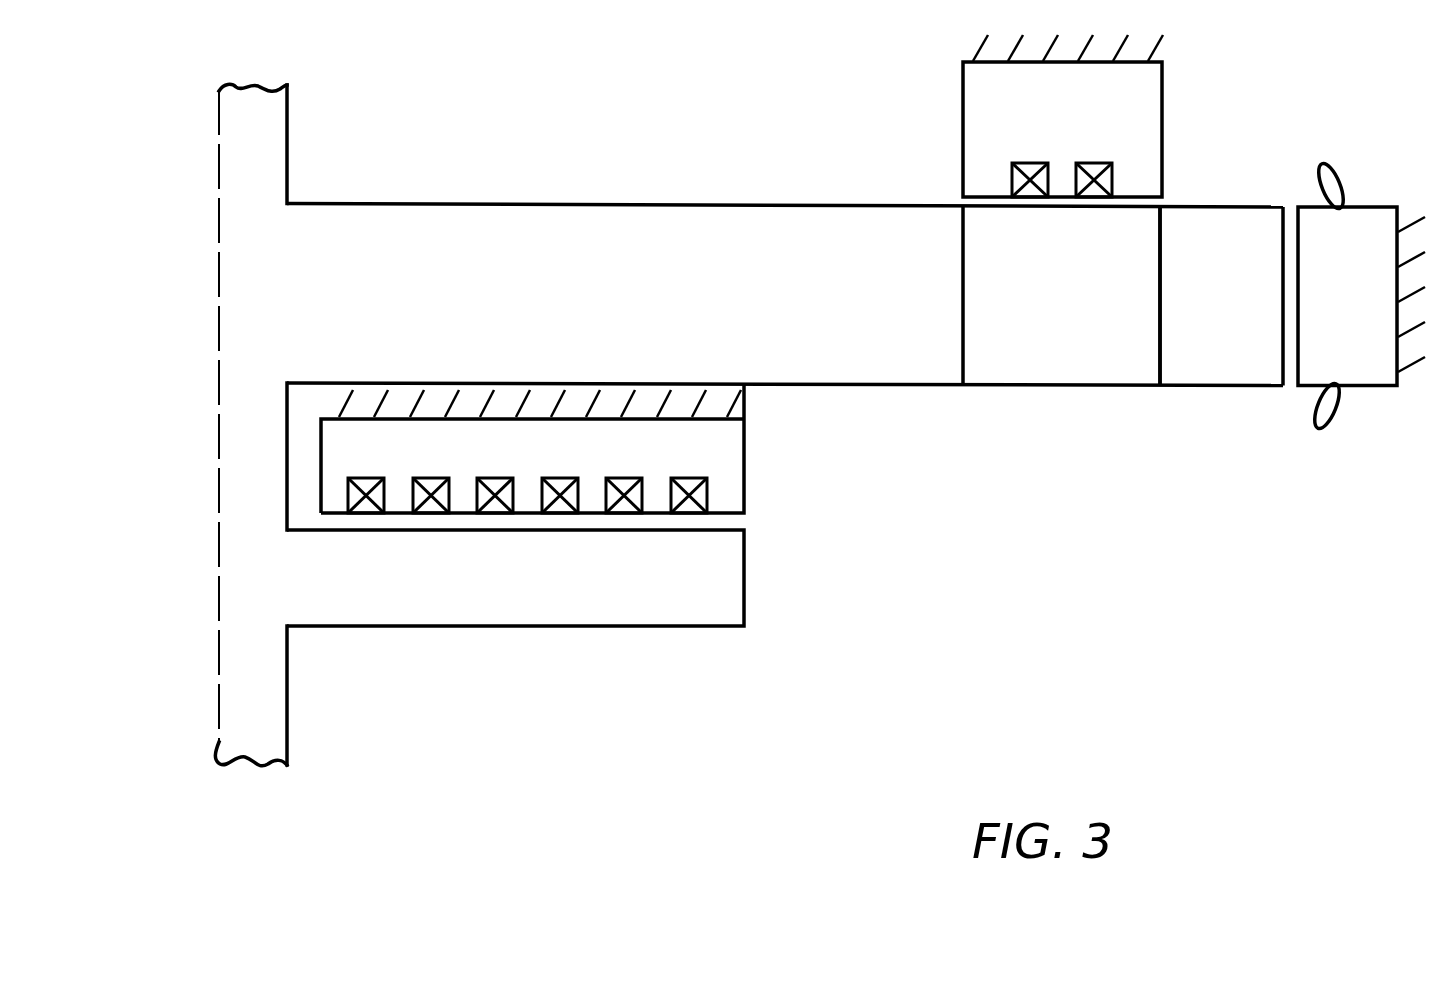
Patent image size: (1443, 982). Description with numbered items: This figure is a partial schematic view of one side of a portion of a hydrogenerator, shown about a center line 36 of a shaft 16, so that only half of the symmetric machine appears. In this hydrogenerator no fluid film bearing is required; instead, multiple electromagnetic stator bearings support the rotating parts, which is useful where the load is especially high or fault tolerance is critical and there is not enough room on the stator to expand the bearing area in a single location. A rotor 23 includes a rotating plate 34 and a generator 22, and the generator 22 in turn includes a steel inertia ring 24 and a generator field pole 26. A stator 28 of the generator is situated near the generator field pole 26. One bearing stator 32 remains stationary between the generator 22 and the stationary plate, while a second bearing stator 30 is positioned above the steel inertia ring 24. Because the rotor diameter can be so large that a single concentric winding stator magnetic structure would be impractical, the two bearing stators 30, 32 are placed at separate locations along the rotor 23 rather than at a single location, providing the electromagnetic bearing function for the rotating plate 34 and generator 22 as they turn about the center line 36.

The shaft 16 is at (268, 287).
The generator 22 is at (563, 308).
The rotor 23 is at (266, 326).
The steel inertia ring 24 is at (1075, 306).
The generator field pole 26 is at (1238, 306).
The stator 28 is at (1365, 306).
The second bearing stator 30 is at (1073, 122).
The bearing stator 32 is at (541, 466).
The rotating plate 34 is at (541, 594).
The center line 36 is at (219, 742).